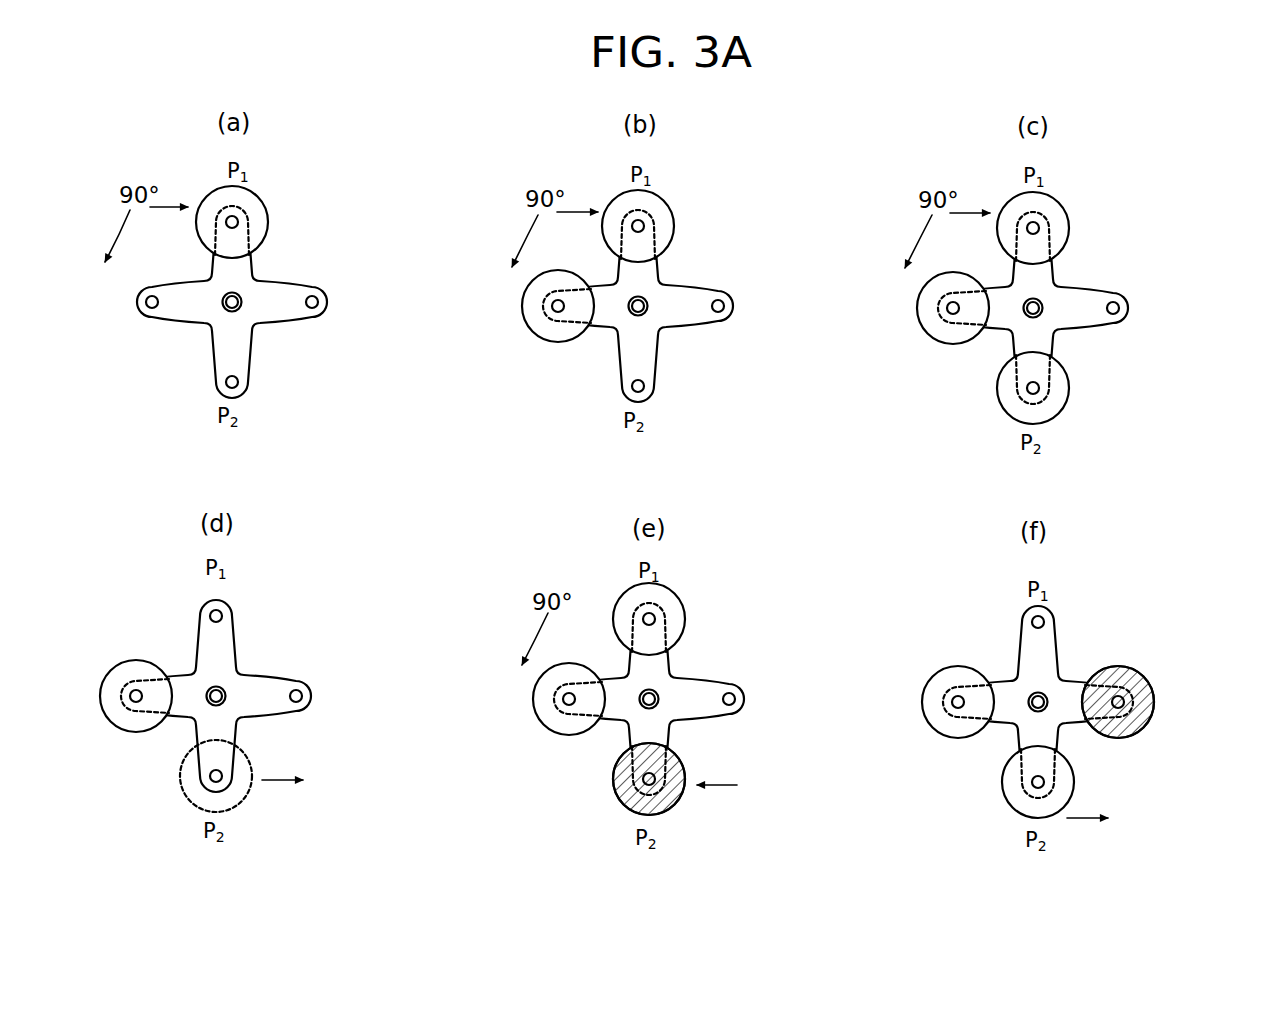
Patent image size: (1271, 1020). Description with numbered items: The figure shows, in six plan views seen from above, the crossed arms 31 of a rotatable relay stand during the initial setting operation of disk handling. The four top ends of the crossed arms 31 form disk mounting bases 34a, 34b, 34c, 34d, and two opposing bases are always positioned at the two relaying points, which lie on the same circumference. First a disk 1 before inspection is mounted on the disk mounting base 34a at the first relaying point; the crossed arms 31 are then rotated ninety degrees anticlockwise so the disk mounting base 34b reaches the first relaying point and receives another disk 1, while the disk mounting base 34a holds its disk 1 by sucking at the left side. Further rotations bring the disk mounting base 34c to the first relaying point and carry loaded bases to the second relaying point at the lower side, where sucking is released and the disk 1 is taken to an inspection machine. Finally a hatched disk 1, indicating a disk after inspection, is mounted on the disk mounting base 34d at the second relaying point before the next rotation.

The disk 1 is at (250, 202).
The crossed arms 31 is at (290, 253).
The disk mounting base 34a is at (187, 235).
The disk mounting base 34b is at (323, 280).
The disk mounting base 34c is at (207, 392).
The disk mounting base 34d is at (142, 332).